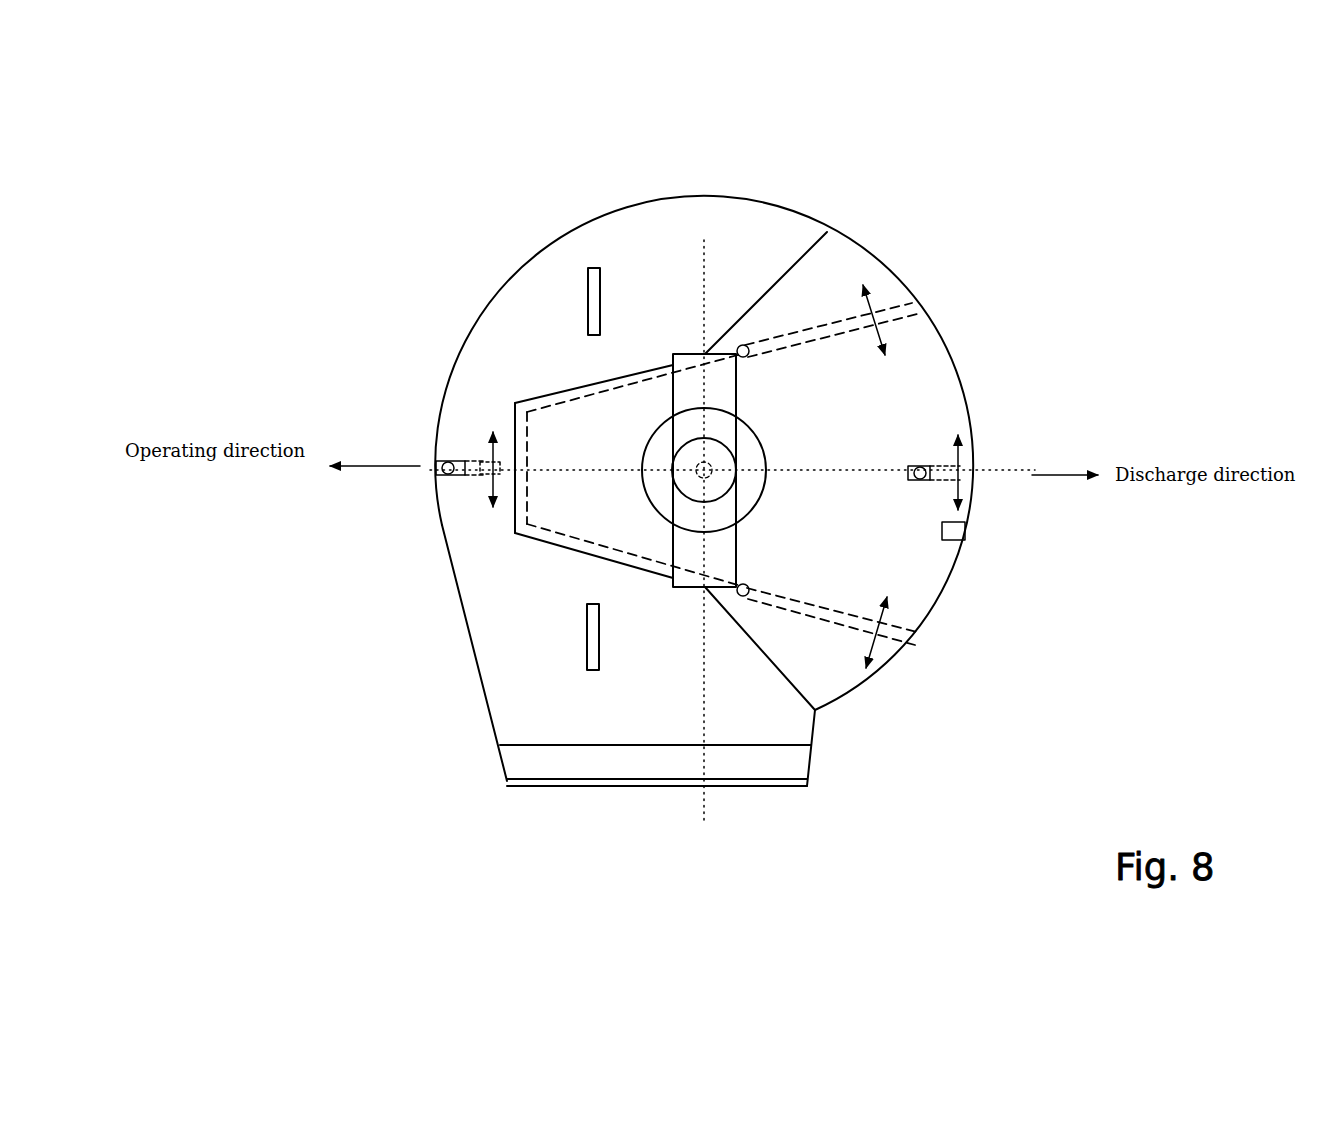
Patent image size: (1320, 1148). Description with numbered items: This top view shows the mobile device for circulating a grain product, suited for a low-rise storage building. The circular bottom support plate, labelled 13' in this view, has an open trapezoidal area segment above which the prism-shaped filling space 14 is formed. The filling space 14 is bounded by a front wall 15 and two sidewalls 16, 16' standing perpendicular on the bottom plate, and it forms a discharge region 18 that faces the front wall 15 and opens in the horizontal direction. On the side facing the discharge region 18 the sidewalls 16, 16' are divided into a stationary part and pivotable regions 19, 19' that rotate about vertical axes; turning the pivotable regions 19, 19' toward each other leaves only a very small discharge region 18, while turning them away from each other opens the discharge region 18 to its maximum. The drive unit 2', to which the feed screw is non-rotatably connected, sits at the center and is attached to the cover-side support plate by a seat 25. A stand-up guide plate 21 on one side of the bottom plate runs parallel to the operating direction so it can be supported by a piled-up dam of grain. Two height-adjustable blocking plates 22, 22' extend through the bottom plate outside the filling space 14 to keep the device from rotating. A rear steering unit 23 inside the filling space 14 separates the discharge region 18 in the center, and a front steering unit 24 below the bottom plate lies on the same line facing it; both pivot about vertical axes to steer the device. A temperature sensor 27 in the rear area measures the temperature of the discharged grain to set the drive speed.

The drive unit 2' is at (535, 514).
The upper chamber 13' is at (736, 293).
The filling space 14 is at (856, 524).
The front wall 15 is at (522, 435).
The sidewall 16 is at (549, 620).
The sidewall 16' is at (562, 310).
The discharge region 18 is at (975, 366).
The pivotable region 19 is at (827, 707).
The pivotable region 19' is at (827, 232).
The stand-up guide plate 21 is at (655, 765).
The height-adjustable blocking plate 22 is at (537, 741).
The height-adjustable blocking plate 22' is at (547, 234).
The rear steering unit 23 is at (967, 473).
The front steering unit 24 is at (477, 468).
The seat 25 is at (727, 558).
The temperature sensor 27 is at (957, 531).